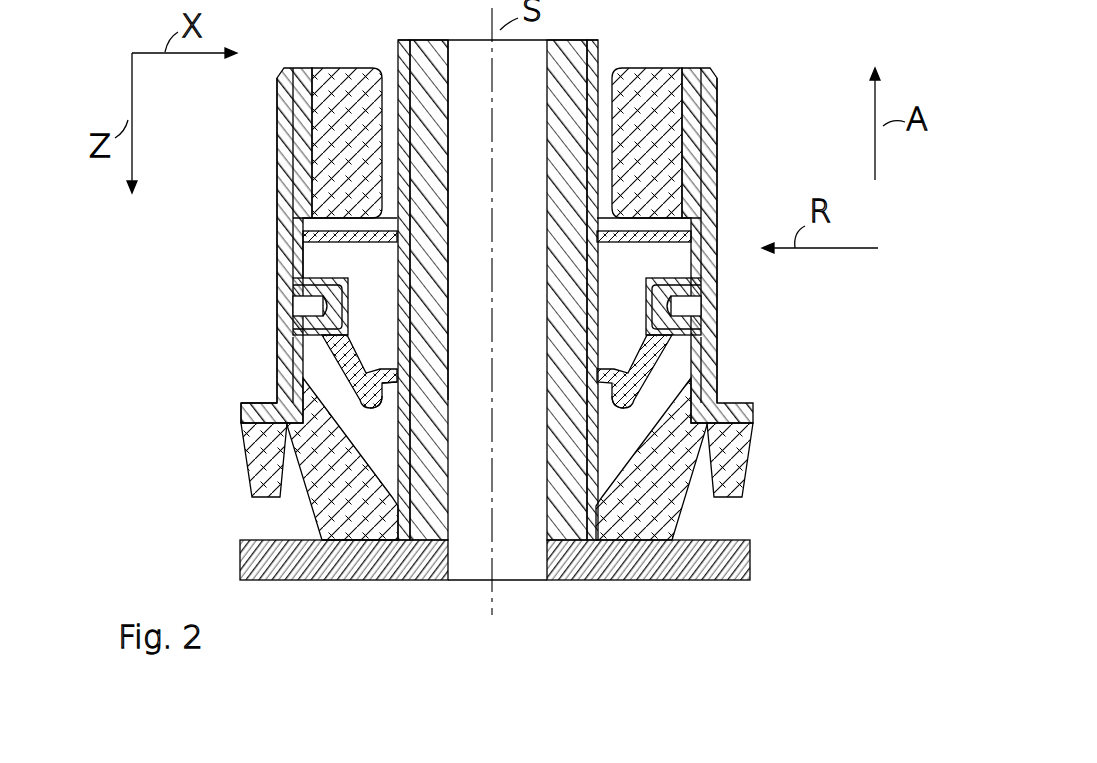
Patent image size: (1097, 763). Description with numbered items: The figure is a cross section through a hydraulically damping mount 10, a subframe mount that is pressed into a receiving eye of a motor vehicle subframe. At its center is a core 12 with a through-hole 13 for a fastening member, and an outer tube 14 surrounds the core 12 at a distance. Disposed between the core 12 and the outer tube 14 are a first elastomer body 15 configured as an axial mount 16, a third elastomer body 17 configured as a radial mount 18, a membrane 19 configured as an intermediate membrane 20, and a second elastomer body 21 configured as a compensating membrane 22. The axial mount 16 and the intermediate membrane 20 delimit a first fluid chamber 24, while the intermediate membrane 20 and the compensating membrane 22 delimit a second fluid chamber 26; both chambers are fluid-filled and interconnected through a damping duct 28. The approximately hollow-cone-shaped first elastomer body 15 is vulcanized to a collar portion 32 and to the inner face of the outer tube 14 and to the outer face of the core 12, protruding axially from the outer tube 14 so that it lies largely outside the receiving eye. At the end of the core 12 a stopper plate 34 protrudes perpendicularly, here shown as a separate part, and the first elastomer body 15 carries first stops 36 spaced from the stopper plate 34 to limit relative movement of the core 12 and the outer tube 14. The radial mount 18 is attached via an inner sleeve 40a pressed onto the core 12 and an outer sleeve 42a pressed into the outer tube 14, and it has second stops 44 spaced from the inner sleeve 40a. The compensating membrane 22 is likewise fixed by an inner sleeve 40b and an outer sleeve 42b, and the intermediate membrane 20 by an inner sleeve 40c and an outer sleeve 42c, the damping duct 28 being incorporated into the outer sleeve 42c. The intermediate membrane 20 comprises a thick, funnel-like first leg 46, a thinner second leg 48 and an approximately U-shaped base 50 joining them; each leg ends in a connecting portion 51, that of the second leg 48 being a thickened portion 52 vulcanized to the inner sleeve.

The hydraulically damping mount 10 is at (747, 77).
The core 12 is at (568, 46).
The through-hole 13 is at (452, 56).
The outer tube 14 is at (718, 350).
The first elastomer body 15 is at (662, 514).
The axial mount 16 is at (330, 513).
The third elastomer body 17 is at (662, 150).
The radial mount 18 is at (352, 75).
The membrane 19 is at (262, 365).
The intermediate membrane 20 is at (523, 353).
The second elastomer body 21 is at (700, 228).
The compensating membrane 22 is at (316, 256).
The first fluid chamber 24 is at (330, 386).
The second fluid chamber 26 is at (316, 258).
The damping duct 28 is at (300, 308).
The collar portion 32 is at (244, 411).
The stopper plate 34 is at (750, 550).
The first stops 36 is at (252, 445).
The inner sleeve 40a is at (413, 116).
The inner sleeve 40b is at (403, 248).
The inner sleeve 40c is at (405, 335).
The outer sleeve 42a is at (693, 115).
The outer sleeve 42b is at (704, 265).
The outer sleeve 42c is at (718, 327).
The second stops 44 is at (446, 223).
The first leg 46 is at (668, 364).
The second leg 48 is at (602, 385).
The base 50 is at (624, 408).
The connecting portion 51 is at (400, 400).
The thickened portion 52 is at (400, 376).